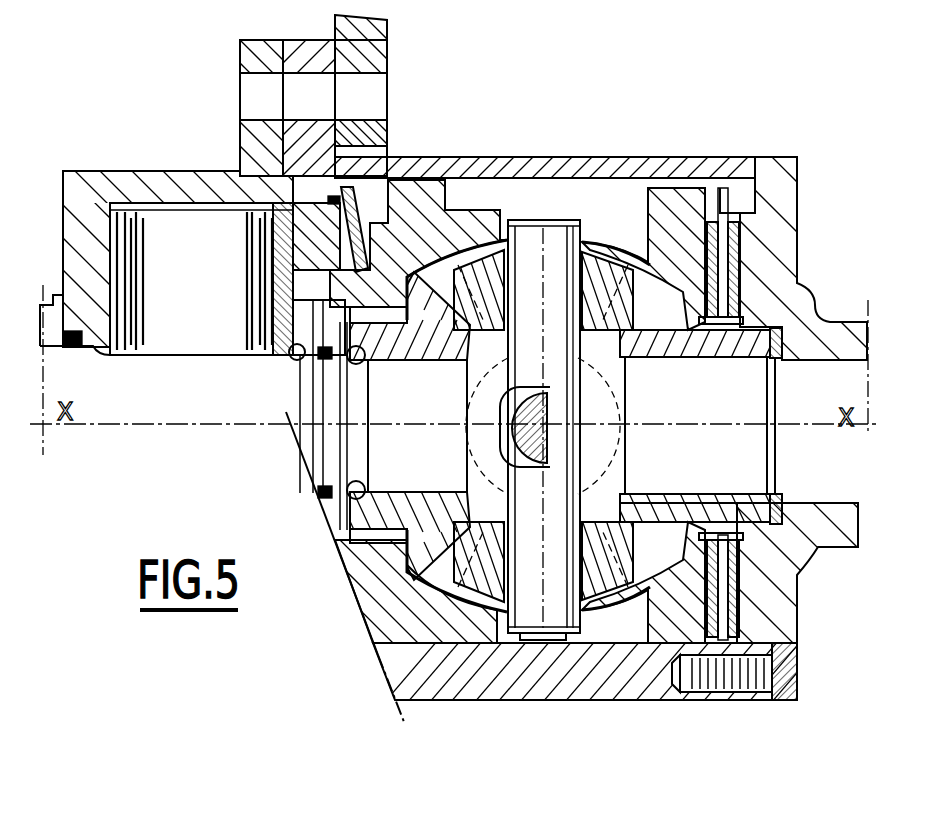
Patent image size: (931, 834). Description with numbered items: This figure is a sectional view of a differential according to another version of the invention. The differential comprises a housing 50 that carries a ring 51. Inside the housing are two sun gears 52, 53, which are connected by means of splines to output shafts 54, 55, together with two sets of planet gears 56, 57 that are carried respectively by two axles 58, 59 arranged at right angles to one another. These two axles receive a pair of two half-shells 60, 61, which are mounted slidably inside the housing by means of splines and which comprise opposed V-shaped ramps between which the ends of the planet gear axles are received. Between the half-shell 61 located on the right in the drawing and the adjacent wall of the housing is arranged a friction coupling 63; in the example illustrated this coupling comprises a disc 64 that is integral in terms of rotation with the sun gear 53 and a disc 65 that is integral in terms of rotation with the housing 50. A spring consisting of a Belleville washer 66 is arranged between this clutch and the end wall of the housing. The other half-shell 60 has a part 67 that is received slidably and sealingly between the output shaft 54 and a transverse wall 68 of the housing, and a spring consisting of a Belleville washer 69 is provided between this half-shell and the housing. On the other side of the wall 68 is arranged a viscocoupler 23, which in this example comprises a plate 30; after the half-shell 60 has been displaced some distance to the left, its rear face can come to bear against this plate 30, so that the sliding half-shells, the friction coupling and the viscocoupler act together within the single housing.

The viscocoupler 23 is at (201, 279).
The plate 30 is at (278, 303).
The housing 50 is at (518, 167).
The ring 51 is at (375, 50).
The sun gear 52 is at (404, 426).
The sun gear 53 is at (665, 347).
The output shaft 54 is at (181, 396).
The output shaft 55 is at (824, 431).
The planet gears 56 is at (606, 265).
The planet gears 57 is at (468, 460).
The axle 58 is at (543, 430).
The axle 59 is at (512, 415).
The half-shell 60 is at (423, 210).
The half-shell 61 is at (690, 210).
The friction coupling 63 is at (745, 177).
The disc 64 is at (733, 242).
The disc 65 is at (728, 198).
The Belleville washer 66 is at (735, 283).
The part 67 is at (280, 357).
The transverse wall 68 is at (295, 200).
The Belleville washer 69 is at (387, 143).